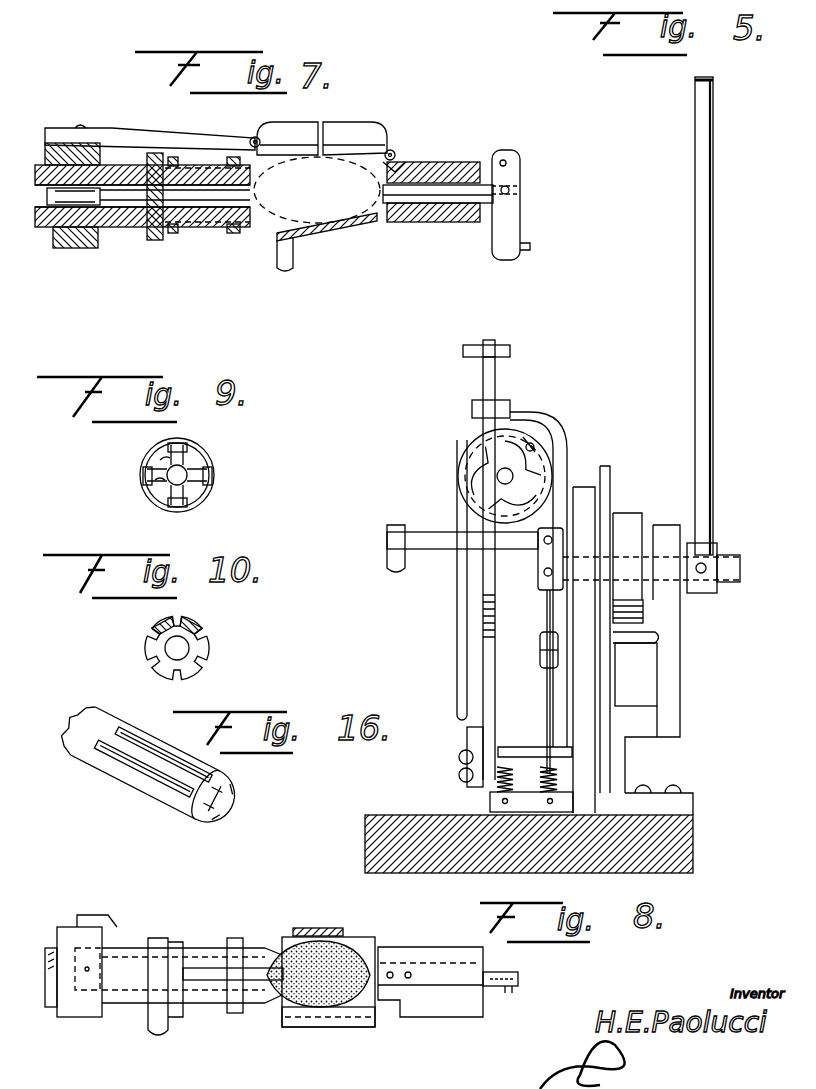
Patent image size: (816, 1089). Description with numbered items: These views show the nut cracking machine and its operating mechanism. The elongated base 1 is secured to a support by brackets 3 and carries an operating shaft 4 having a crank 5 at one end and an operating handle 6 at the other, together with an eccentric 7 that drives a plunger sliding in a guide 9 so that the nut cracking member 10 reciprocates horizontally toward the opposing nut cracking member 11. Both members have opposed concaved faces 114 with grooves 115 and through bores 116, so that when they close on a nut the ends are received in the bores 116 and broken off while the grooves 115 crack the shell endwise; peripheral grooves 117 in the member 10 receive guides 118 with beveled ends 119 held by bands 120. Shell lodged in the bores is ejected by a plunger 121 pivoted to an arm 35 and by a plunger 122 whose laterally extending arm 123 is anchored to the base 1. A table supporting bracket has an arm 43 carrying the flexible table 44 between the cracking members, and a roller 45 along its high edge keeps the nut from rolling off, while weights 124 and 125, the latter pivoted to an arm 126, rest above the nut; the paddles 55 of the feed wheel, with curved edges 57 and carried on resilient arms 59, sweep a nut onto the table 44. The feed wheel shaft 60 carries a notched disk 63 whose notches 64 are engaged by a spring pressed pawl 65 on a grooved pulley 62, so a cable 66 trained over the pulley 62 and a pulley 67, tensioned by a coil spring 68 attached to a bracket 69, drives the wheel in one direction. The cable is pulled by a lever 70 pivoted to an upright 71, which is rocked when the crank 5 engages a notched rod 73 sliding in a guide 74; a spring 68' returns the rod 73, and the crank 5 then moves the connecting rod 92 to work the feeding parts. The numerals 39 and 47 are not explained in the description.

In FIG. 5, the elongated base 1 is at (554, 736).
In FIG. 5, the brackets 3 is at (587, 702).
In FIG. 5, the operating shaft 4 is at (732, 570).
In FIG. 5, the crank 5 is at (548, 553).
In FIG. 5, the operating handle 6 is at (712, 325).
In FIG. 5, the eccentric 7 is at (640, 530).
In FIG. 8, the guide 9 is at (83, 1020).
In FIG. 7, the nut cracking member 10 is at (225, 215).
In FIG. 9, the nut cracking member 10 is at (145, 455).
In FIG. 10, the nut cracking member 10 is at (208, 629).
In FIG. 16, the nut cracking member 10 is at (122, 786).
In FIG. 8, the nut cracking member 10 is at (197, 960).
In FIG. 7, the nut cracking member 11 is at (417, 222).
In FIG. 8, the nut cracking member 11 is at (418, 955).
In FIG. 7, the arm 35 is at (530, 246).
In FIG. 8, the arm 35 is at (515, 993).
In FIG. 5, the bracket 39 is at (613, 729).
In FIG. 7, the arm 43 is at (277, 250).
In FIG. 7, the table 44 is at (343, 242).
In FIG. 8, the table 44 is at (367, 997).
In FIG. 8, the roller 45 is at (357, 1027).
In FIG. 5, the gear 47 is at (620, 646).
In FIG. 8, the paddles 55 is at (350, 937).
In FIG. 8, the curved edge 57 is at (287, 930).
In FIG. 8, the resilient arms 59 is at (340, 930).
In FIG. 5, the shaft 60 is at (496, 478).
In FIG. 5, the grooved pulley 62 is at (548, 463).
In FIG. 5, the notched disk 63 is at (504, 490).
In FIG. 5, the notches 64 is at (515, 503).
In FIG. 5, the spring pressed pawl 65 is at (532, 445).
In FIG. 5, the cable 66 is at (456, 655).
In FIG. 5, the pulley 67 is at (538, 667).
In FIG. 5, the coil spring 68 is at (598, 768).
In FIG. 5, the spring 68' is at (486, 797).
In FIG. 5, the bracket 69 is at (540, 797).
In FIG. 5, the lever 70 is at (467, 738).
In FIG. 5, the upright 71 is at (562, 713).
In FIG. 5, the notched rod 73 is at (497, 382).
In FIG. 5, the guide 74 is at (477, 410).
In FIG. 5, the connecting rod 92 is at (395, 568).
In FIG. 7, the concaved faces 114 is at (392, 155).
In FIG. 9, the concaved faces 114 is at (188, 458).
In FIG. 10, the concaved faces 114 is at (153, 630).
In FIG. 7, the grooves 115 is at (262, 170).
In FIG. 9, the grooves 115 is at (203, 503).
In FIG. 10, the grooves 115 is at (208, 648).
In FIG. 16, the grooves 115 is at (218, 813).
In FIG. 7, the bores 116 is at (132, 240).
In FIG. 9, the bores 116 is at (157, 503).
In FIG. 10, the bores 116 is at (163, 673).
In FIG. 16, the bores 116 is at (232, 790).
In FIG. 8, the grooves 117 is at (213, 963).
In FIG. 8, the guides 118 is at (212, 975).
In FIG. 8, the beveled portions 119 is at (266, 950).
In FIG. 8, the bands 120 is at (233, 1013).
In FIG. 7, the plunger 121 is at (497, 153).
In FIG. 8, the plunger 121 is at (495, 970).
In FIG. 7, the plunger 122 is at (185, 232).
In FIG. 8, the laterally extending arm 123 is at (120, 930).
In FIG. 7, the weight 124 is at (357, 127).
In FIG. 7, the weight 125 is at (285, 132).
In FIG. 7, the arm 126 is at (163, 135).